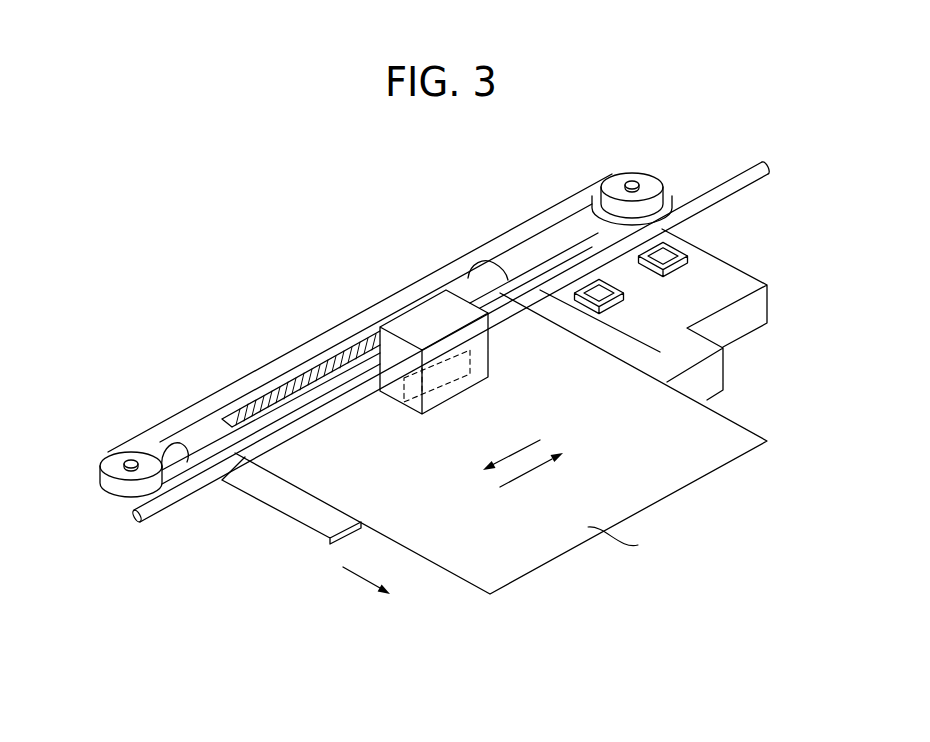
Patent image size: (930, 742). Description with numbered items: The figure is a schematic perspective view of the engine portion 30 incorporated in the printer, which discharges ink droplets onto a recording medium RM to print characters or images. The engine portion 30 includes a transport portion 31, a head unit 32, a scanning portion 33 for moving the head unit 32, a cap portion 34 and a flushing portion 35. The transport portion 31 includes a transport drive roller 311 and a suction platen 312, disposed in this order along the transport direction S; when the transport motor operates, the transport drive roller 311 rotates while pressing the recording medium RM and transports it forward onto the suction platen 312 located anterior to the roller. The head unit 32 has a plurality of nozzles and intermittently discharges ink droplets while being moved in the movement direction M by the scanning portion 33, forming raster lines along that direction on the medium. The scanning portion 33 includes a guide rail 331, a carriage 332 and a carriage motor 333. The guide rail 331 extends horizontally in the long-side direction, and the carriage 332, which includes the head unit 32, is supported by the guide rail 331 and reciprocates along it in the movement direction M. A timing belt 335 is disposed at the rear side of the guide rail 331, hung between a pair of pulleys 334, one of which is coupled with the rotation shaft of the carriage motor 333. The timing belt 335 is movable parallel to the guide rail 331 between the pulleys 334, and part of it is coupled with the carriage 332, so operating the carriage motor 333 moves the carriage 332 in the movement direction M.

The engine portion 30 is at (753, 132).
The transport portion 31 is at (211, 532).
The transport drive roller 311 is at (182, 440).
The suction platen 312 is at (636, 346).
The head unit 32 is at (470, 366).
The scanning portion 33 is at (431, 213).
The guide rail 331 is at (133, 521).
The carriage 332 is at (423, 323).
The carriage motor 333 is at (591, 206).
The pulleys 334 is at (110, 461).
The timing belt 335 is at (236, 392).
The cap portion 34 is at (666, 252).
The flushing portion 35 is at (600, 284).